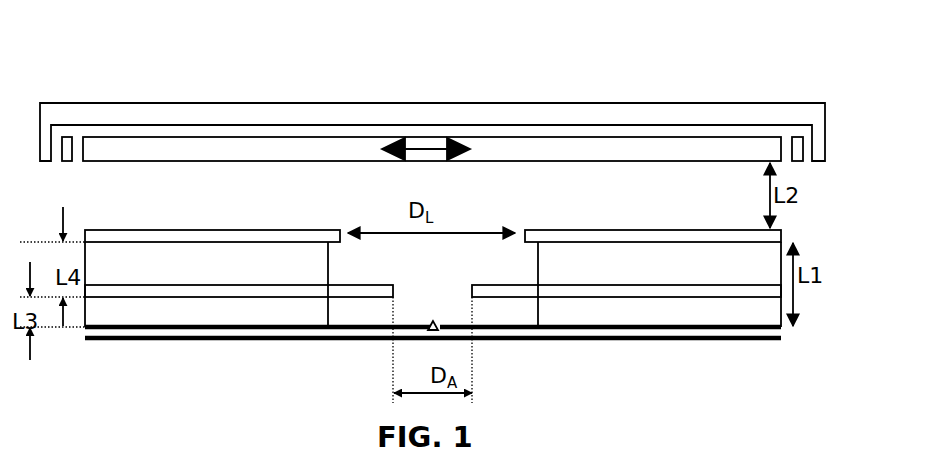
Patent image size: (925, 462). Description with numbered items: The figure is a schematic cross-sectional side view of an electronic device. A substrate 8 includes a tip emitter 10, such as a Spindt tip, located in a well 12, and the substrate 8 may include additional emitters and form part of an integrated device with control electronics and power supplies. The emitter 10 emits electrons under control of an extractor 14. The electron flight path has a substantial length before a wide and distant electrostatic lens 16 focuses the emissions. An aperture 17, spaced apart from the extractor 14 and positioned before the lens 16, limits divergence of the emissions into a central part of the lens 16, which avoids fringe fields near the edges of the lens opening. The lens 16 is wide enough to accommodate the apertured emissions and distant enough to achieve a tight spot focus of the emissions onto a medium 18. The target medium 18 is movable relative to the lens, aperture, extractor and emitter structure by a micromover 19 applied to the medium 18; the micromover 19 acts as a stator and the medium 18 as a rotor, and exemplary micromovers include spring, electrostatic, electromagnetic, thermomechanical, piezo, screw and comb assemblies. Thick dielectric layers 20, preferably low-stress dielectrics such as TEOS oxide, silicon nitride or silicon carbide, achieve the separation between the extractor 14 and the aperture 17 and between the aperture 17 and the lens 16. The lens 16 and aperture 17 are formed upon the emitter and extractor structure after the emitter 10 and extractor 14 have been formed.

The substrate 8 is at (73, 340).
The tip emitter 10 is at (435, 322).
The well 12 is at (433, 323).
The extractor 14 is at (785, 328).
The electrostatic lens 16 is at (527, 232).
The aperture 17 is at (474, 285).
The medium 18 is at (431, 161).
The micromover 19 is at (84, 86).
The dielectric layers 20 is at (295, 307).